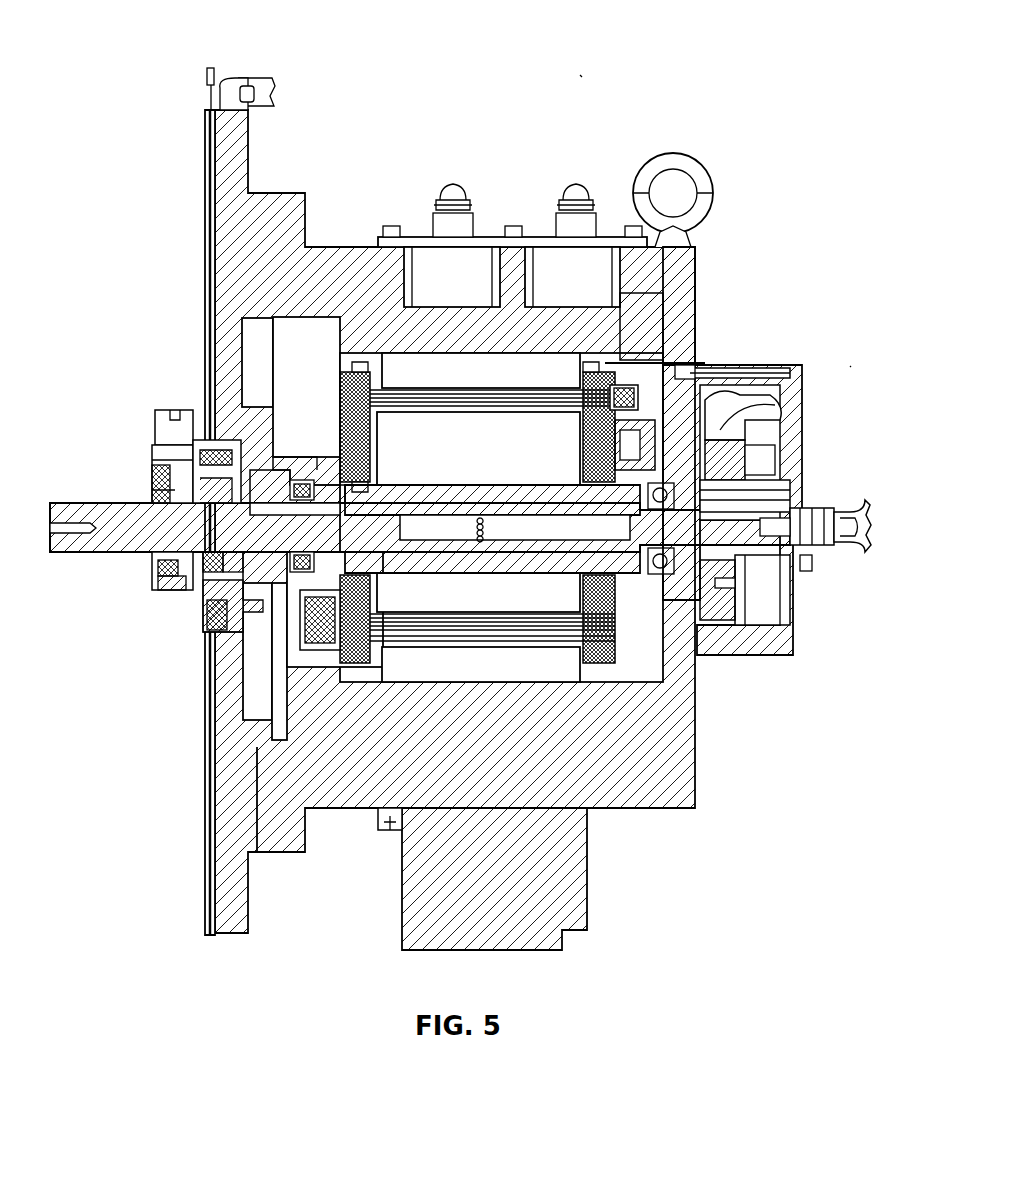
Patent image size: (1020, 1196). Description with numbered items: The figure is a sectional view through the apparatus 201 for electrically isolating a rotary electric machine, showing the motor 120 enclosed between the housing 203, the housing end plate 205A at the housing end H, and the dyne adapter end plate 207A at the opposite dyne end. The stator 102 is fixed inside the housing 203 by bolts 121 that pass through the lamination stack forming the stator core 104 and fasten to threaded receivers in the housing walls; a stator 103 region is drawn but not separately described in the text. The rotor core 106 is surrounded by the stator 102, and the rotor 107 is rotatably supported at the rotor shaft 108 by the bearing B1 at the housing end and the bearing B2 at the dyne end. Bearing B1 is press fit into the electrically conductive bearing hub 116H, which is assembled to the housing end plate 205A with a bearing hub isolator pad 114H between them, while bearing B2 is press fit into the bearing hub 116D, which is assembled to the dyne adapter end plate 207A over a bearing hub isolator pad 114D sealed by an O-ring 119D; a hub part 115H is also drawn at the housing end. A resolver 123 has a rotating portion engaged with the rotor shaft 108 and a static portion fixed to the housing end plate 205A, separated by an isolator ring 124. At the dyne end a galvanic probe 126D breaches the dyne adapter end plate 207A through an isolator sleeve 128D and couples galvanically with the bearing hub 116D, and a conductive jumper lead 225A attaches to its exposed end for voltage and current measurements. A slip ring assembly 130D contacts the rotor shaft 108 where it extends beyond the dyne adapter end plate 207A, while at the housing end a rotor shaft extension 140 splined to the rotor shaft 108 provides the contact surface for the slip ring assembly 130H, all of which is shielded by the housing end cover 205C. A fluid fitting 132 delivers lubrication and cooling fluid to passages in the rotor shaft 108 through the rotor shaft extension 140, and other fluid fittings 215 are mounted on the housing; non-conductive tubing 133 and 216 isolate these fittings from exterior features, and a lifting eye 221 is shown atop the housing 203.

The apparatus 201 is at (596, 74).
The housing 203 is at (322, 245).
The housing end plate 205A is at (700, 338).
The housing end cover 205C is at (802, 408).
The dyne adapter end plate 207A is at (222, 250).
The fluid fittings 215 is at (258, 112).
The non-conductive tubing 216 is at (255, 78).
The lifting eye 221 is at (716, 188).
The conductive jumper lead 225A is at (207, 98).
The stator 102 is at (336, 358).
The stator core 103 is at (662, 300).
The stator core 104 is at (509, 385).
The rotor core 106 is at (479, 453).
The rotor 107 is at (205, 612).
The rotor shaft 108 is at (373, 539).
The bearing hub isolator pad 114D is at (200, 440).
The bearing hub isolator pad 114H is at (800, 492).
The bearing carrier 115H is at (600, 440).
The bearing hub 116D is at (228, 395).
The bearing hub 116H is at (705, 605).
The O-ring 119D is at (196, 452).
The motor 120 is at (645, 314).
The bolts 121 is at (329, 360).
The resolver 123 is at (765, 432).
The isolator ring 124 is at (760, 378).
The galvanic probe 126D is at (285, 465).
The isolator sleeve 128D is at (197, 548).
The slip ring assembly 130D is at (160, 463).
The slip ring assembly 130H is at (785, 470).
The fluid fitting 132 is at (830, 552).
The non-conductive tubing 133 is at (862, 538).
The rotor shaft extension 140 is at (780, 600).
The bearing B1 is at (662, 575).
The bearing B2 is at (235, 548).
The housing end H is at (864, 366).